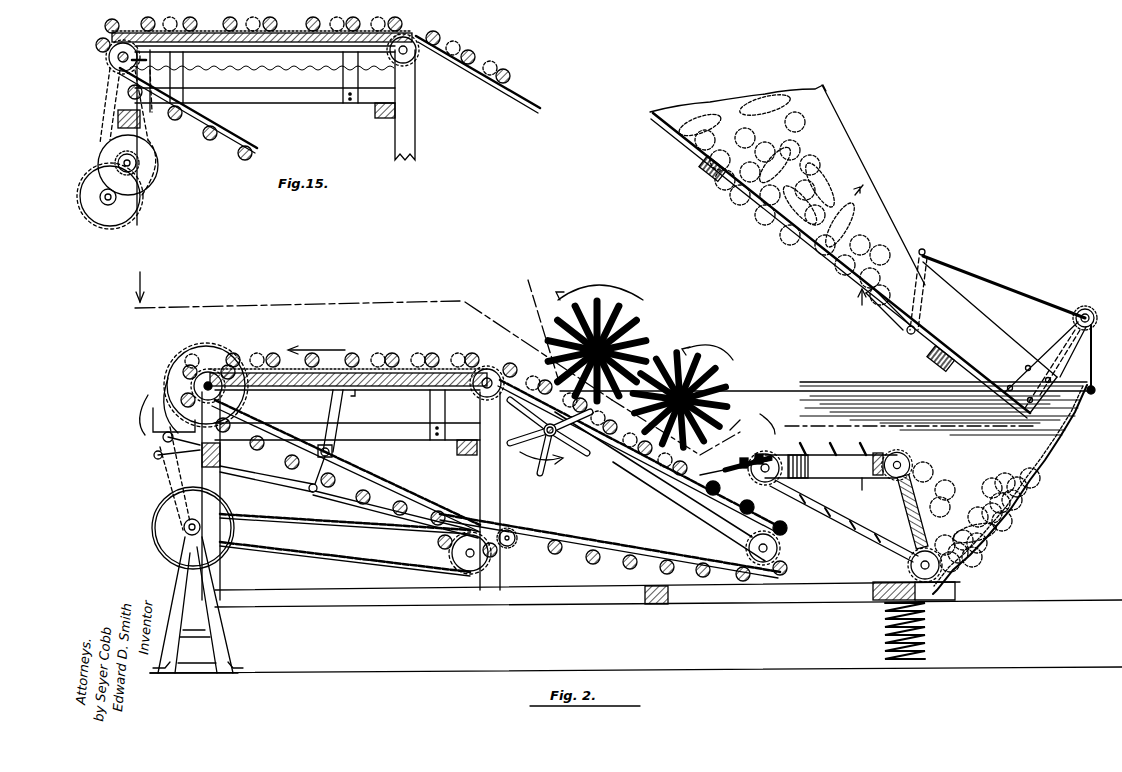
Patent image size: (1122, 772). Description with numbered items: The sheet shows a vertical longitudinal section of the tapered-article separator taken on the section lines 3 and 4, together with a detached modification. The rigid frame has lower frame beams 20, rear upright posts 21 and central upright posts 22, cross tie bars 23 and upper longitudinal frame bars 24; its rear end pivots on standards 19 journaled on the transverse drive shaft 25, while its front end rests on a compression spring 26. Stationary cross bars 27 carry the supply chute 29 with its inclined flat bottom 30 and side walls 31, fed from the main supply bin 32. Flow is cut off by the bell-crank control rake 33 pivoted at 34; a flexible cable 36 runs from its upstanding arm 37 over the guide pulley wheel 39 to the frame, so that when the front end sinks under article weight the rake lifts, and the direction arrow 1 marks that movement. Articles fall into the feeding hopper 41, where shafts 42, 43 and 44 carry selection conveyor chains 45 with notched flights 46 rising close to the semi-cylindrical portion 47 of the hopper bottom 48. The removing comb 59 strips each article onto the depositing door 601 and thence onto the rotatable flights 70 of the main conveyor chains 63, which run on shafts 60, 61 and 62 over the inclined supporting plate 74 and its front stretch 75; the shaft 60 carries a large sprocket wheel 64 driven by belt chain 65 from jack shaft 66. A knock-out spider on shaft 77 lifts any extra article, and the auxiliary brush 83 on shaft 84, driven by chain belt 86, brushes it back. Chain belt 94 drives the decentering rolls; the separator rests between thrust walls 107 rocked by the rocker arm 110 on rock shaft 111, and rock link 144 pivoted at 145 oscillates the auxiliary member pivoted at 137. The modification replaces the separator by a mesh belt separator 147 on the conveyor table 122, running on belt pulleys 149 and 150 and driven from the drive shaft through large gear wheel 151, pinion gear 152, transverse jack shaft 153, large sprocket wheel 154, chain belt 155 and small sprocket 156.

In FIG. 2, the direction arrow 1 is at (859, 307).
In FIG. 2, the section line 3— 3 is at (688, 310).
In FIG. 2, the section line 4— 4 is at (531, 279).
In FIG. 2, the standards 19 is at (196, 605).
In FIG. 2, the lower frame beams 20 is at (636, 627).
In FIG. 15, the rear upright posts 21 is at (133, 222).
In FIG. 2, the rear upright posts 21 is at (220, 578).
In FIG. 15, the central upright posts 22 is at (410, 133).
In FIG. 2, the central upright posts 22 is at (500, 572).
In FIG. 15, the cross tie bars 23 is at (383, 118).
In FIG. 2, the cross tie bars 23 is at (462, 454).
In FIG. 15, the upper longitudinal frame bars 24 is at (265, 79).
In FIG. 2, the upper longitudinal frame bars 24 is at (385, 423).
In FIG. 15, the transverse drive shaft 25 is at (117, 198).
In FIG. 2, the transverse drive shaft 25 is at (184, 528).
In FIG. 2, the compression spring 26 is at (885, 636).
In FIG. 2, the stationary cross bars 27 is at (722, 182).
In FIG. 2, the supply chute 29 is at (990, 337).
In FIG. 2, the inclined flat bottom 30 is at (830, 255).
In FIG. 2, the side walls 31 is at (928, 259).
In FIG. 2, the main supply bin 32 is at (738, 108).
In FIG. 2, the bell-crank control rake 33 is at (884, 312).
In FIG. 2, the pivot 34 is at (910, 336).
In FIG. 2, the flexible cable 36 is at (1000, 287).
In FIG. 2, the upstanding arm 37 is at (920, 230).
In FIG. 2, the guide pulley wheel 39 is at (1090, 312).
In FIG. 2, the feeding hopper 41 is at (838, 385).
In FIG. 2, the transverse shaft 42 is at (772, 478).
In FIG. 2, the upper front transverse shaft 43 is at (895, 478).
In FIG. 2, the lowermost transverse shaft 44 is at (918, 555).
In FIG. 2, the selection conveyor chains 45 is at (825, 531).
In FIG. 2, the selection conveyor flights 46 is at (545, 462).
In FIG. 2, the semi-cylindrical portion 47 is at (935, 602).
In FIG. 2, the tank 48 is at (1000, 489).
In FIG. 2, the removing comb 59 is at (752, 417).
In FIG. 15, the rearmost upper main conveyor shaft 60 is at (128, 45).
In FIG. 2, the rearmost upper main conveyor shaft 60 is at (210, 372).
In FIG. 15, the main conveyor shaft 61 is at (406, 48).
In FIG. 2, the main conveyor shaft 61 is at (489, 373).
In FIG. 2, the lower front main conveyor shaft 62 is at (778, 548).
In FIG. 15, the main conveyor chains 63 is at (458, 68).
In FIG. 2, the main conveyor chains 63 is at (580, 540).
In FIG. 2, the large sprocket wheel 64 is at (168, 382).
In FIG. 2, the belt chain 65 is at (200, 358).
In FIG. 2, the jack shaft 66 is at (177, 478).
In FIG. 15, the rotatable flights 70 is at (313, 20).
In FIG. 2, the rotatable flights 70 is at (470, 366).
In FIG. 2, the inclined supporting plate 74 is at (668, 484).
In FIG. 2, the inclined conveyor 75 is at (643, 462).
In FIG. 2, the spider shaft 77 is at (530, 461).
In FIG. 2, the auxiliary brush 83 is at (630, 332).
In FIG. 2, the auxiliary brush shaft 84 is at (597, 347).
In FIG. 2, the chain belt 86 is at (602, 430).
In FIG. 2, the chain belt 94 is at (312, 528).
In FIG. 2, the thrust walls 107 is at (360, 392).
In FIG. 2, the rocker arm 110 is at (340, 404).
In FIG. 2, the rock shaft 111 is at (332, 455).
In FIG. 15, the conveyor table 122 is at (208, 40).
In FIG. 2, the conveyor table 122 is at (348, 368).
In FIG. 2, the pivot 137 is at (157, 403).
In FIG. 2, the rock link 144 is at (260, 476).
In FIG. 2, the pivot 145 is at (312, 493).
In FIG. 15, the mesh belt separator 147 is at (282, 50).
In FIG. 15, the belt pulley 149 is at (104, 47).
In FIG. 15, the belt pulley 150 is at (372, 55).
In FIG. 15, the large gear wheel 151 is at (102, 222).
In FIG. 15, the pinion gear 152 is at (140, 162).
In FIG. 15, the transverse jack shaft 153 is at (150, 175).
In FIG. 15, the large sprocket wheel 154 is at (90, 160).
In FIG. 15, the chain belt 155 is at (155, 138).
In FIG. 15, the small sprocket 156 is at (152, 61).
In FIG. 2, the depositing door 601 is at (693, 482).